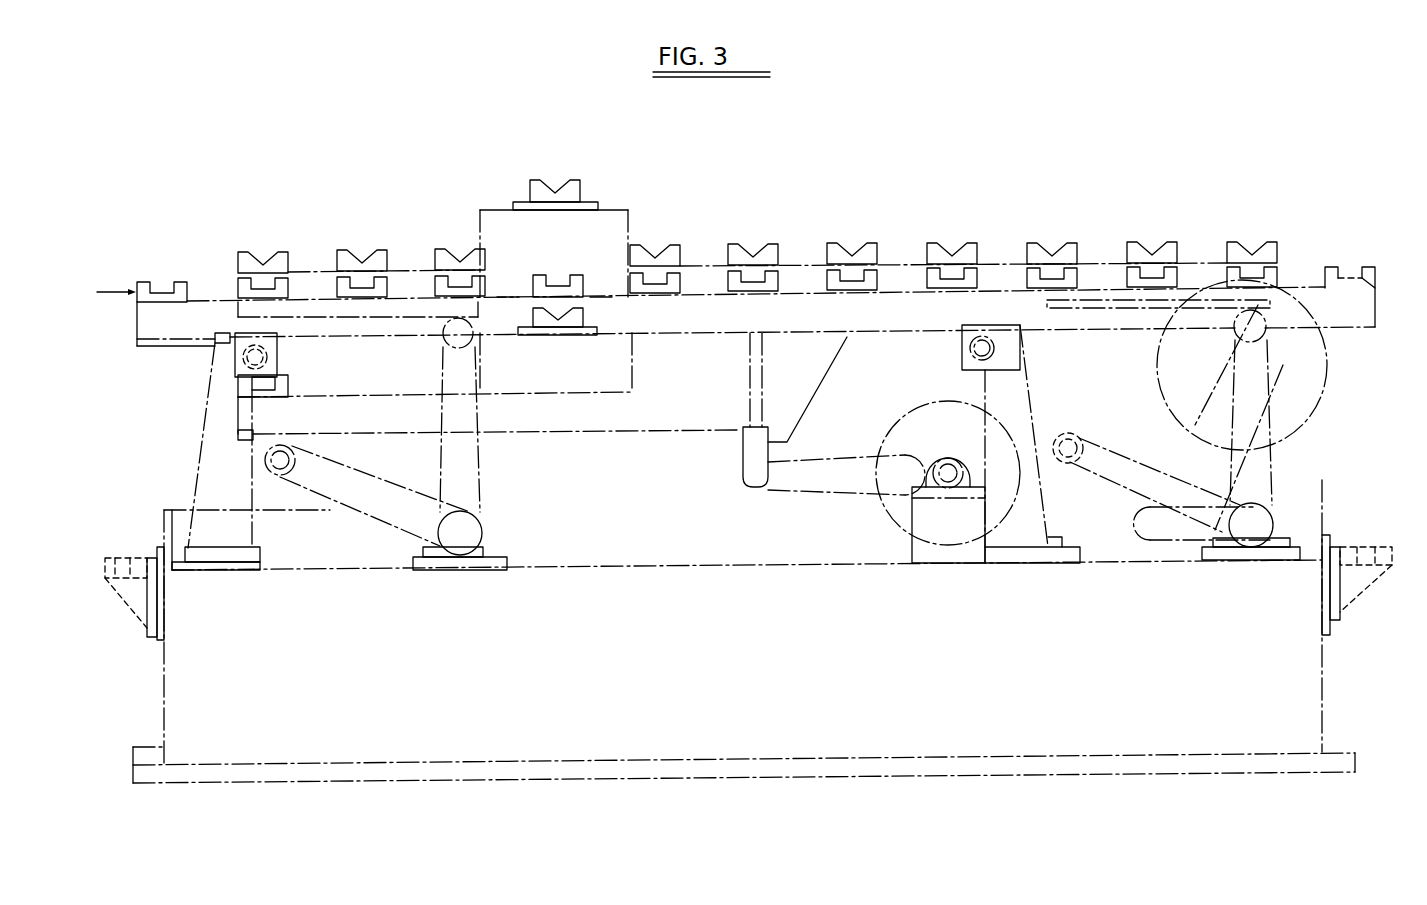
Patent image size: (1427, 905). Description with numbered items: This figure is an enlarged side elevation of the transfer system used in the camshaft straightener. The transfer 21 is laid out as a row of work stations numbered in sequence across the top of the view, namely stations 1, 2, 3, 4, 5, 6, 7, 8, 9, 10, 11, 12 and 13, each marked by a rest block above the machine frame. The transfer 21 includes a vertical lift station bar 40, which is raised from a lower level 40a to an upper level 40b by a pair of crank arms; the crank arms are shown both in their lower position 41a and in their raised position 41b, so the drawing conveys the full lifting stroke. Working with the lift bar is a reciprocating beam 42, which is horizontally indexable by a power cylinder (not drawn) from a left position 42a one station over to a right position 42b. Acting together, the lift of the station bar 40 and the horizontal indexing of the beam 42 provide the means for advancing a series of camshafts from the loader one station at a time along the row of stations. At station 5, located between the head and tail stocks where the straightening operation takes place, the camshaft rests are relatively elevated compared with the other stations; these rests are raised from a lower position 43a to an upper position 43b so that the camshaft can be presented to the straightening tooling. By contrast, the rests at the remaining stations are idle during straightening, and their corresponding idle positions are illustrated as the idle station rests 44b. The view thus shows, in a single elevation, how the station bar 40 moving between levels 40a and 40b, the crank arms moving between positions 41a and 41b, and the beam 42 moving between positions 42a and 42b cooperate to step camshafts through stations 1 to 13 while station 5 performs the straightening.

The work station # 1 is at (160, 281).
The work station # 2 is at (262, 251).
The work station # 3 is at (360, 249).
The work station # 4 is at (458, 248).
The station No. 5 is at (555, 232).
The work station # 6 is at (655, 244).
The work station # 7 is at (753, 243).
The work station # 8 is at (852, 242).
The work station # 9 is at (950, 242).
The work station # 10 is at (1051, 242).
The work station # 11 is at (1150, 241).
The work station # 12 is at (1250, 241).
The work station # 13 is at (1348, 252).
The transfer 21 is at (220, 241).
The vertical lift station bar 40 is at (226, 267).
The level of lift station bar 40a is at (335, 390).
The level of lift station bar 40b is at (308, 268).
The lower position of crank arms 41a is at (418, 460).
The raised position of crank arms 41b is at (480, 480).
The reciprocating beam 42 is at (116, 277).
The left position of reciprocating beam 42a is at (172, 297).
The right position of reciprocating beam 42b is at (1377, 273).
The lowered position of camshaft rests 43a is at (600, 340).
The raised position of camshaft rests 43b is at (582, 187).
The idle station rests 44b is at (727, 257).